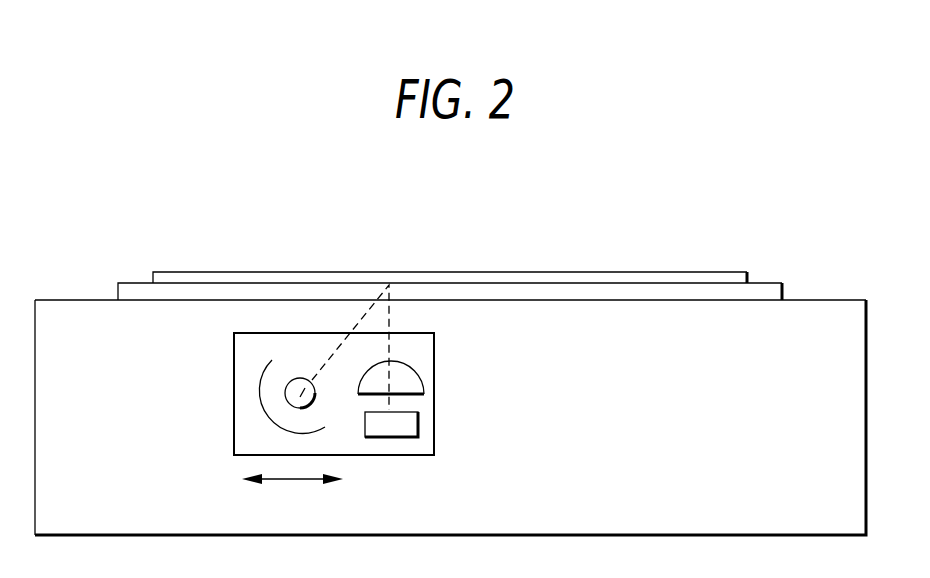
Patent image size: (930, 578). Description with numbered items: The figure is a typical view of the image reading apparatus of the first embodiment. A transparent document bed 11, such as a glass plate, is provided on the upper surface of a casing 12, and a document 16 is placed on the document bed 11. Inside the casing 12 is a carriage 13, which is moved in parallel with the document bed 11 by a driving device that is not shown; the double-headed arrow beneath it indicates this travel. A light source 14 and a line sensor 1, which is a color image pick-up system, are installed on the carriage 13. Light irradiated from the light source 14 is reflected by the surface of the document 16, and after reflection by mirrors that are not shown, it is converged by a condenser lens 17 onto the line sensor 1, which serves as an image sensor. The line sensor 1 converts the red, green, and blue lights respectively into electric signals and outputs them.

The line sensor 1 is at (418, 423).
The document bed 11 is at (762, 280).
The casing 12 is at (833, 297).
The carriage 13 is at (233, 427).
The light source 14 is at (285, 392).
The document 16 is at (598, 270).
The condenser lens 17 is at (424, 388).